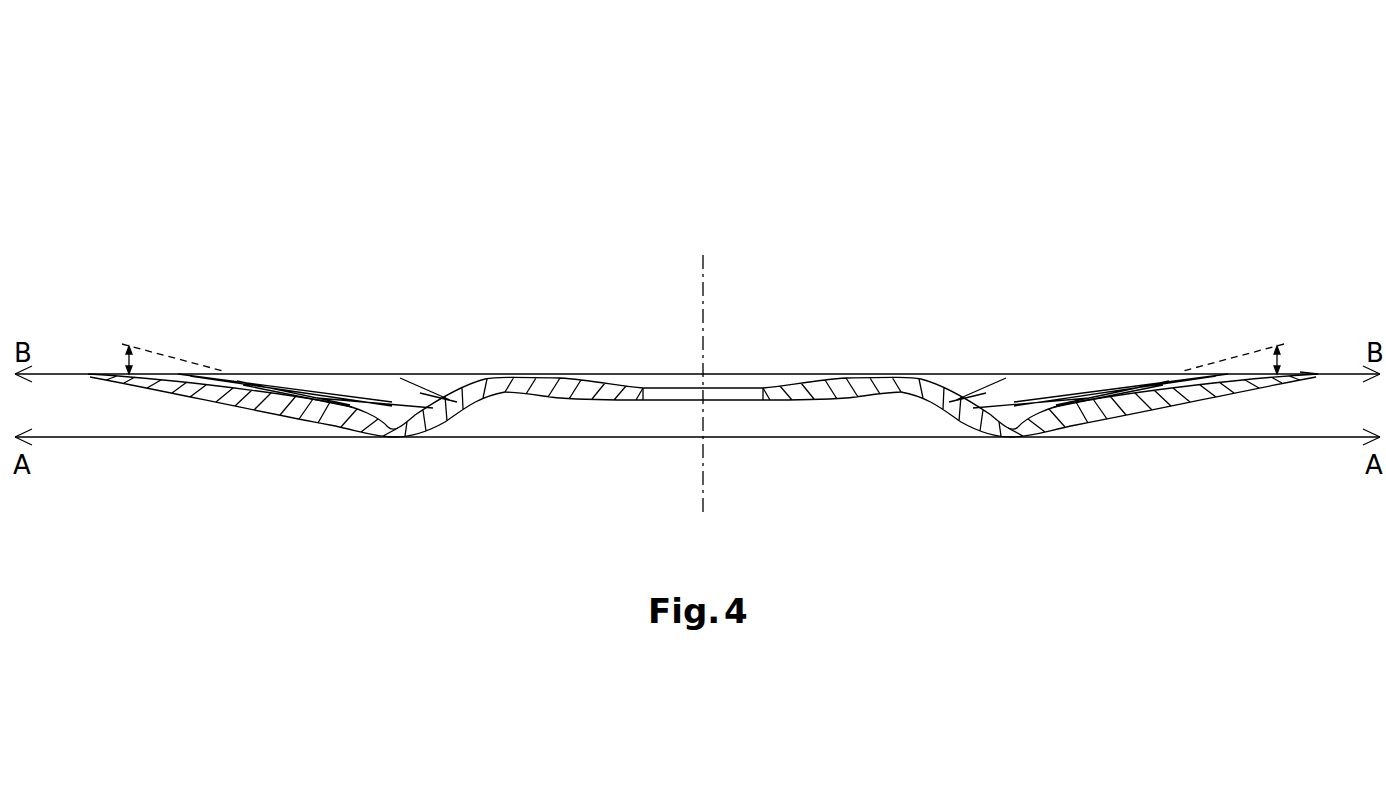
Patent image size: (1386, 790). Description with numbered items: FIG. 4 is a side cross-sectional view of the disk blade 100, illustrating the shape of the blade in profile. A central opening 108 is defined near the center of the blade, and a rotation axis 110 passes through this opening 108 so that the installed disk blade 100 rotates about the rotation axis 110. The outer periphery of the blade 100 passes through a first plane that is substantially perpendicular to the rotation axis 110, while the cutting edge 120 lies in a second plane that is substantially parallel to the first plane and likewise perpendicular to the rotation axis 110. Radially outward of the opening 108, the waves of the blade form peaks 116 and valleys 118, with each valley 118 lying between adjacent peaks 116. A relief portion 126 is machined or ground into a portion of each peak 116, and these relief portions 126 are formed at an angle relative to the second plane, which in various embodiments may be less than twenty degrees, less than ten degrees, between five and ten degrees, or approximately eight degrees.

The disk blade 100 is at (1060, 160).
The opening 108 is at (726, 403).
The rotation axis 110 is at (703, 276).
The peak 116 is at (432, 406).
The valley 118 is at (474, 380).
The cutting edge 120 is at (1318, 373).
The relief portion 126 is at (380, 374).